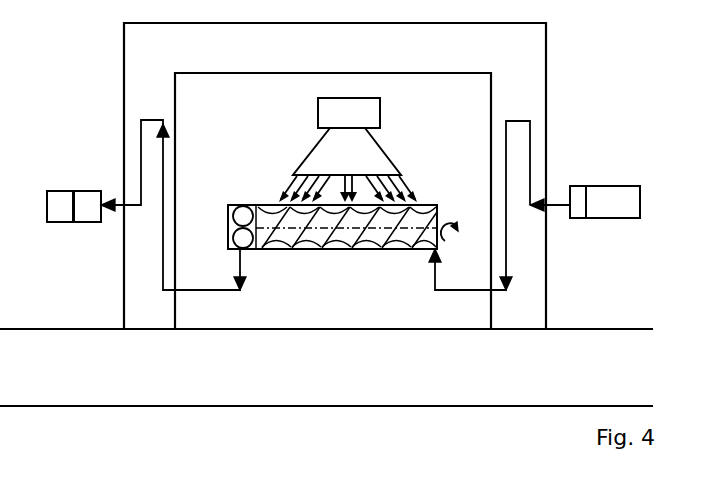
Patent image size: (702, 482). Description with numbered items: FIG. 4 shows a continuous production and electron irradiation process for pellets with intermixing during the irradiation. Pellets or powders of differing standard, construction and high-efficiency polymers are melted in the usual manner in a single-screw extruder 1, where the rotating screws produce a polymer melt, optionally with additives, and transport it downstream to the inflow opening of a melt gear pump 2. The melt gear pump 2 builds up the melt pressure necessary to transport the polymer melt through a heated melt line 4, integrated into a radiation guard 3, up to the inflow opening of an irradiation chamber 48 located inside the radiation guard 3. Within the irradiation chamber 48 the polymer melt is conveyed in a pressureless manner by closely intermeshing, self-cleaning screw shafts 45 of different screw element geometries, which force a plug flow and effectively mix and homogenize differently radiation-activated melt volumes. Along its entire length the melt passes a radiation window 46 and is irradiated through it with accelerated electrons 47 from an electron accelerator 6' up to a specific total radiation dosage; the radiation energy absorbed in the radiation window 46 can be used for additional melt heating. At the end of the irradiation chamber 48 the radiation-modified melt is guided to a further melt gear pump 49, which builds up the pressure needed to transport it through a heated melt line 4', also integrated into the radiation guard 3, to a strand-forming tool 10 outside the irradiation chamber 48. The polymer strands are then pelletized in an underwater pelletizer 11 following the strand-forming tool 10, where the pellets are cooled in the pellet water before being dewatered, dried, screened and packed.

The single-screw extruder 1 is at (618, 188).
The melt gear pump 2 is at (578, 190).
The radiation guard 3 is at (143, 93).
The heated melt line 4 is at (479, 205).
The heated melt line 4' is at (147, 205).
The electron accelerator 6' is at (332, 136).
The strand-forming tool 10 is at (80, 197).
The underwater pelletizer 11 is at (61, 197).
The screw shafts 45 is at (270, 250).
The radiation window 46 is at (268, 205).
The accelerated electrons 47 is at (408, 193).
The irradiation chamber 48 is at (386, 250).
The melt gear pump 49 is at (232, 207).